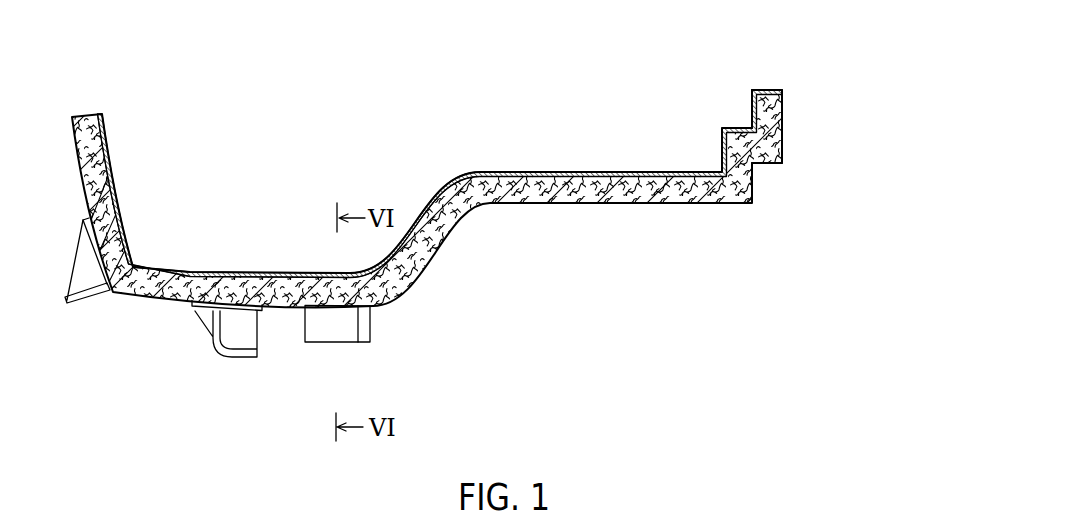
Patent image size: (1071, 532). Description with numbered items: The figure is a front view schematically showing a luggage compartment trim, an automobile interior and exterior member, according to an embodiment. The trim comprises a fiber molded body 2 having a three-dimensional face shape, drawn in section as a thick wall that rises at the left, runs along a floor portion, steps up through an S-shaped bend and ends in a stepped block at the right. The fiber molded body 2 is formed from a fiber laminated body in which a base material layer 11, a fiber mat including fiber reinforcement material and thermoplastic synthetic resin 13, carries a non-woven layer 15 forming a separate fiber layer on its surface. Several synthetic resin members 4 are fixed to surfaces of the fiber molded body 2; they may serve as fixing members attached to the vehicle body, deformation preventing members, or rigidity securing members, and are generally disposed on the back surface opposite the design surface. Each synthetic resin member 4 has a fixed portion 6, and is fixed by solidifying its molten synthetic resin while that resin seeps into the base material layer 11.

The fiber molded body 2 is at (767, 76).
The synthetic resin member 4 is at (63, 300).
The fixed portion 6 is at (88, 215).
The base material layer 11 is at (840, 126).
The thermoplastic synthetic resin 13 is at (780, 118).
The non-woven layer 15 is at (752, 117).